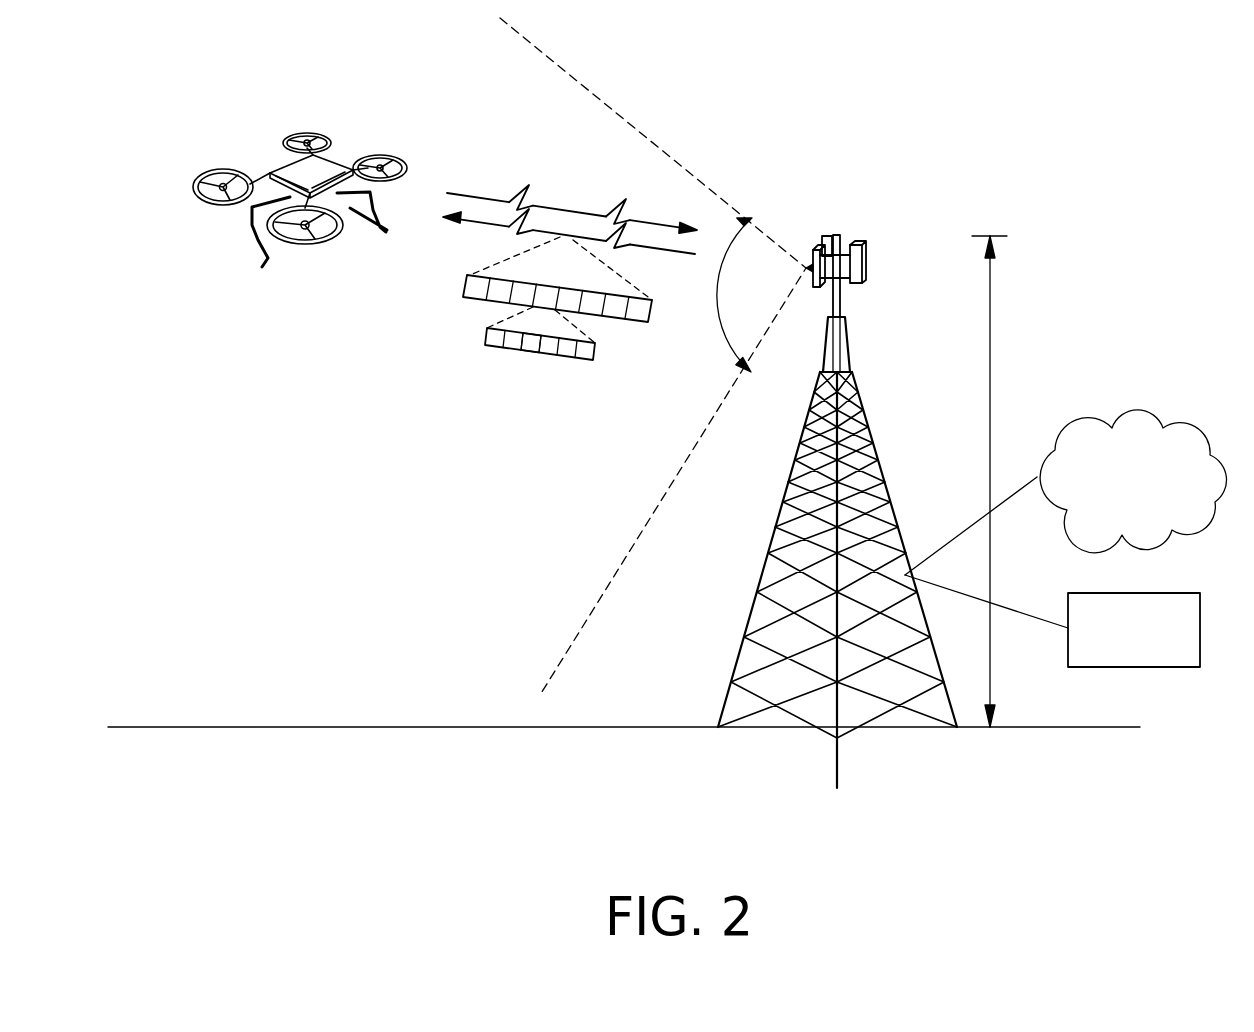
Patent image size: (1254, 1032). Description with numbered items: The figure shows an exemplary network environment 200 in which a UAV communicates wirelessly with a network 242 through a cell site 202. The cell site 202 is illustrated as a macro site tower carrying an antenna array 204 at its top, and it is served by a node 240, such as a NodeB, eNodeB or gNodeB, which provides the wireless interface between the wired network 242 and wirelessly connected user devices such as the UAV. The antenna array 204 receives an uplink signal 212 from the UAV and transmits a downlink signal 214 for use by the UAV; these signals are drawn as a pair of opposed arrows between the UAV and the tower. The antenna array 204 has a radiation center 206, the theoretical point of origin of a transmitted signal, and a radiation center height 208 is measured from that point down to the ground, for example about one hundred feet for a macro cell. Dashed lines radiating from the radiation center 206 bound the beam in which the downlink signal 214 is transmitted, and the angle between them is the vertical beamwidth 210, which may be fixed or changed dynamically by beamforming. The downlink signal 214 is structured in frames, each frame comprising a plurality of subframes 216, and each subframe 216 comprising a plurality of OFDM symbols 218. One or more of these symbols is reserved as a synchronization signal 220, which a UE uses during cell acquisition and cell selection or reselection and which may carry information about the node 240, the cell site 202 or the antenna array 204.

The network environment 200 is at (1152, 92).
The cell site 202 is at (762, 608).
The antenna array 204 is at (801, 251).
The radiation center 206 is at (806, 270).
The radiation center height 208 is at (990, 362).
The vertical beamwidth 210 is at (720, 343).
The uplink signal 212 is at (588, 211).
The downlink signal 214 is at (479, 221).
The subframe 216 is at (652, 312).
The OFDM symbol 218 is at (595, 355).
The synchronization signal 220 is at (530, 347).
The node 240 is at (1158, 593).
The network 242 is at (1148, 412).